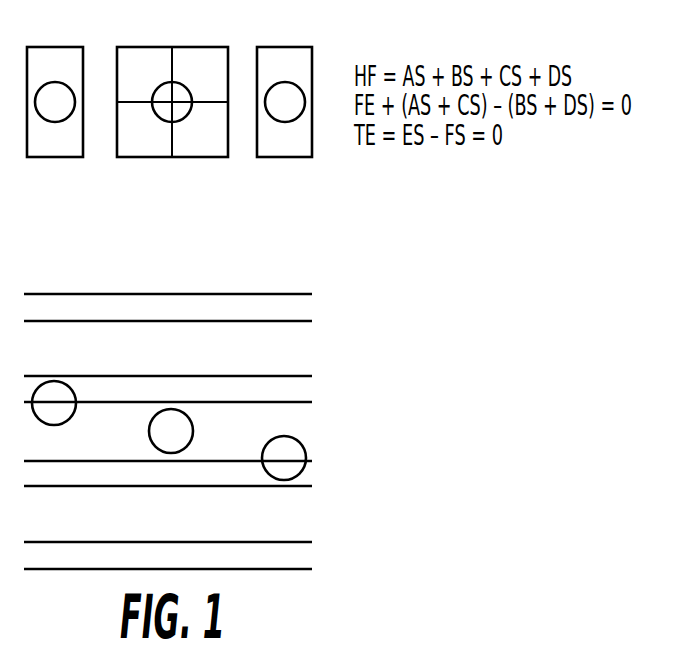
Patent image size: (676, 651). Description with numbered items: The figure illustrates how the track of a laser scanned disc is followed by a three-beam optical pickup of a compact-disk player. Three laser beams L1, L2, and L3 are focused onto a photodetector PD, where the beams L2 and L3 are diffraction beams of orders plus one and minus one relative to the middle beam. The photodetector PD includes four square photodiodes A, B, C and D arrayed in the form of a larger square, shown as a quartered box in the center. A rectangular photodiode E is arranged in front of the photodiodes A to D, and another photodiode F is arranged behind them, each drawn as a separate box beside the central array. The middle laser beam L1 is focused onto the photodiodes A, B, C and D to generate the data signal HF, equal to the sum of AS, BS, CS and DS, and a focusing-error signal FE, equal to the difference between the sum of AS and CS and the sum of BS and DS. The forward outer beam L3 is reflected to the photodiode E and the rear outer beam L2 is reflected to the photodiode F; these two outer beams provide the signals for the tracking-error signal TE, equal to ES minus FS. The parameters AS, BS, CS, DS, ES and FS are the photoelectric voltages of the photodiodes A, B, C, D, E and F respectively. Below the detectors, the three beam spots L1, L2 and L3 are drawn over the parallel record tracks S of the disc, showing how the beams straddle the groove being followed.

The photodetector PD is at (172, 83).
The square photodiode A is at (133, 64).
The square photodiode B is at (213, 64).
The square photodiode C is at (212, 140).
The square photodiode D is at (132, 140).
The rectangular photodiode E is at (284, 102).
The photodiode F is at (55, 102).
The laser beam L1 is at (182, 415).
The laser beam L2 is at (58, 385).
The laser beam L3 is at (287, 437).
The tracks of the optical disc S is at (302, 349).